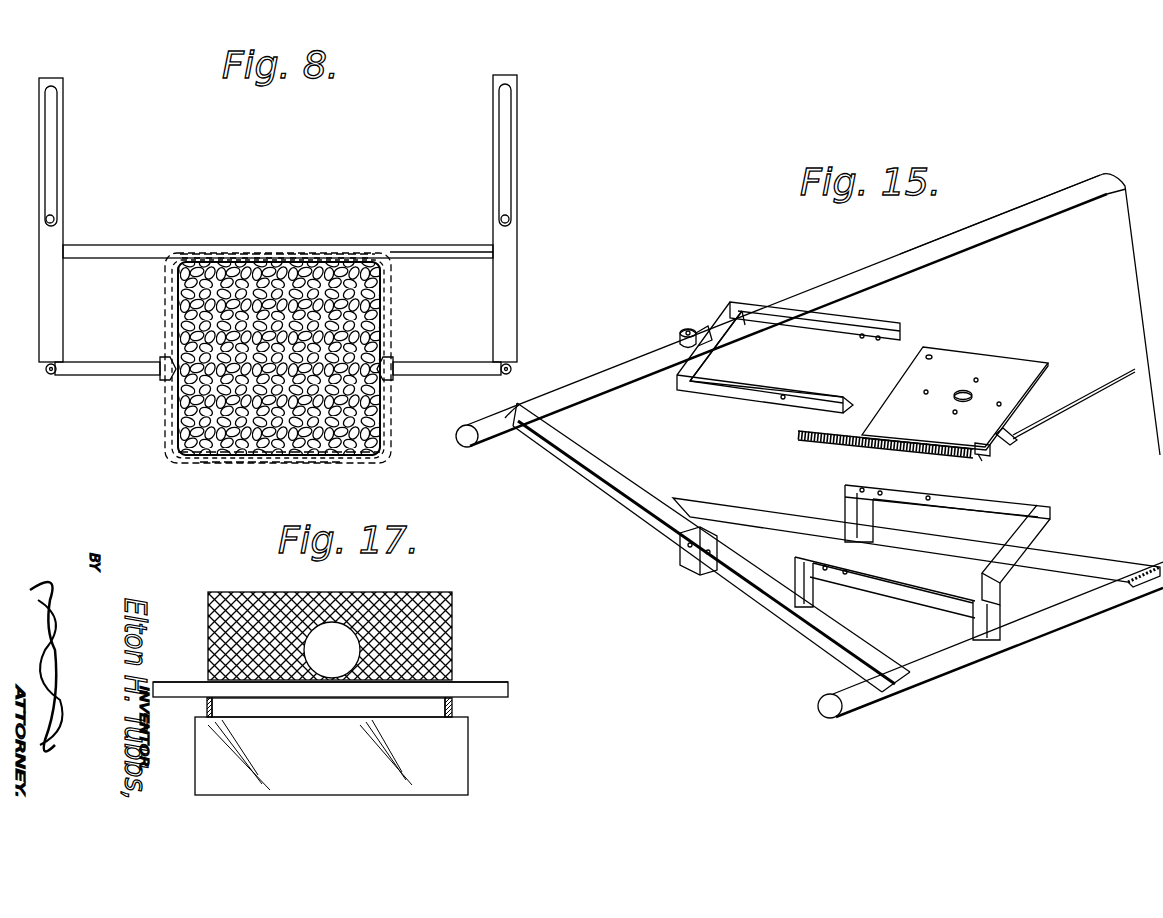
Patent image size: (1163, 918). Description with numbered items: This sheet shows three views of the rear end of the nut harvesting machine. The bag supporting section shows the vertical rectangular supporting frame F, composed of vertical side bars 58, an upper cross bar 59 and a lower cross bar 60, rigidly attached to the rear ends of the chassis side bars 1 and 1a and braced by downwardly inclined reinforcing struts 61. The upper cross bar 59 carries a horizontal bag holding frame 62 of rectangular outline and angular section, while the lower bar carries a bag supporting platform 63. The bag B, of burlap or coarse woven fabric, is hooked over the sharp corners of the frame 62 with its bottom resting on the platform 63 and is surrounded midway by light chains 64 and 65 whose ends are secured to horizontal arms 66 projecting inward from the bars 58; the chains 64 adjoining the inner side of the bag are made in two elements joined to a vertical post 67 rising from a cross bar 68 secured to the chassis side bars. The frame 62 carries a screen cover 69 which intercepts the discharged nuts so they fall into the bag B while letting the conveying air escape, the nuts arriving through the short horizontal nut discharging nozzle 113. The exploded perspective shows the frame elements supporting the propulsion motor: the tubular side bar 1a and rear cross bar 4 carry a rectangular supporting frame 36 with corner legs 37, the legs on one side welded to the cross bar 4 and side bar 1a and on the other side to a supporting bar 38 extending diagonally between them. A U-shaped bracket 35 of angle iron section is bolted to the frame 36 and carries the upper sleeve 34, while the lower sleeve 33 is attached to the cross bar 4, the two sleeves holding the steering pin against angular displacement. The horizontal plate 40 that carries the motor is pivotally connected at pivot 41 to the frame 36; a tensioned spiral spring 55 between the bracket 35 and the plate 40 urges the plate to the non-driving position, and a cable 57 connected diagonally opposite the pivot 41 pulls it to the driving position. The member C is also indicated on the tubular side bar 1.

In FIG. 8, the side bar 1 is at (63, 104).
In FIG. 15, the side bar 1 is at (848, 287).
In FIG. 8, the side bar 1a is at (493, 110).
In FIG. 15, the side bar 1a is at (1045, 622).
In FIG. 15, the rear cross bar 4 is at (636, 505).
In FIG. 15, the lower sleeve 33 is at (688, 573).
In FIG. 15, the upper sleeve 34 is at (688, 328).
In FIG. 15, the U-shaped bracket 35 is at (760, 314).
In FIG. 15, the rectangular supporting frame 36 is at (975, 505).
In FIG. 15, the corner legs 37 is at (845, 495).
In FIG. 15, the supporting bar 38 is at (768, 517).
In FIG. 15, the horizontal plate 40 is at (998, 366).
In FIG. 15, the pivot 41 is at (931, 355).
In FIG. 15, the spiral spring 55 is at (843, 444).
In FIG. 15, the cable 57 is at (1108, 382).
In FIG. 8, the vertical side bars 58 is at (52, 374).
In FIG. 15, the vertical side bars 58 is at (506, 372).
In FIG. 17, the upper cross bar 59 is at (175, 682).
In FIG. 8, the lower cross bar 60 is at (163, 381).
In FIG. 8, the reinforcing struts 61 is at (50, 151).
In FIG. 17, the bag holding frame 62 is at (210, 716).
In FIG. 8, the bag supporting platform 63 is at (357, 463).
In FIG. 8, the chains 64 is at (337, 257).
In FIG. 8, the chains 65 is at (243, 463).
In FIG. 8, the horizontal arms 66 is at (98, 375).
In FIG. 8, the vertical post 67 is at (278, 252).
In FIG. 8, the cross bar 68 is at (452, 252).
In FIG. 17, the screen cover 69 is at (208, 614).
In FIG. 17, the nut discharging nozzle 113 is at (332, 622).
In FIG. 8, the bag B is at (170, 316).
In FIG. 17, the bag B is at (468, 757).
In FIG. 15, the frame member C is at (910, 250).
In FIG. 8, the vertical rectangular supporting frame F is at (151, 245).
In FIG. 17, the vertical rectangular supporting frame F is at (488, 682).